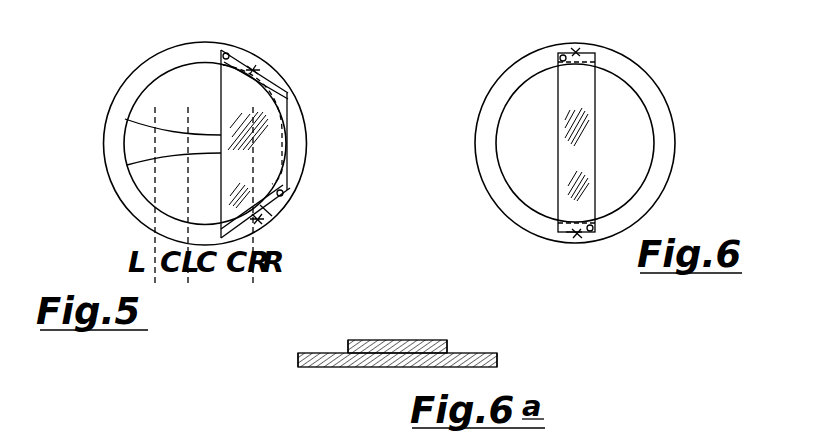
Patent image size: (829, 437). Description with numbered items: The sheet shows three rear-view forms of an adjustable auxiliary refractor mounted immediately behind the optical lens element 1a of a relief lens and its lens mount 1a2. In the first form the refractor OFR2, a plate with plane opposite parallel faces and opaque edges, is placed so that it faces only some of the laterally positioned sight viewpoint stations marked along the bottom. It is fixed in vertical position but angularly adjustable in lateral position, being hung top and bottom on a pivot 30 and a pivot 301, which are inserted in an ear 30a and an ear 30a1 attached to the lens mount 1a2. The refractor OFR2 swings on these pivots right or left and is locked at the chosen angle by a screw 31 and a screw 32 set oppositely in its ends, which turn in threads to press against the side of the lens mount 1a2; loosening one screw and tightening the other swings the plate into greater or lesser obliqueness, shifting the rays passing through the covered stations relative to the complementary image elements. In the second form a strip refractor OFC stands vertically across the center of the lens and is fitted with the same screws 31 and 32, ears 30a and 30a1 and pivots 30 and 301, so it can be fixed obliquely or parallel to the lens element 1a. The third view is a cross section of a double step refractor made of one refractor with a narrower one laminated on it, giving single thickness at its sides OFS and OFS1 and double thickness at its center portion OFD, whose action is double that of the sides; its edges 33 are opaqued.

In FIG. 5, the optical lens element 1a is at (150, 143).
In FIG. 6, the optical lens element 1a is at (522, 161).
In FIG. 5, the lens mount 1a2 is at (119, 118).
In FIG. 6, the lens mount 1a2 is at (490, 135).
In FIG. 5, the pivot 30 is at (258, 71).
In FIG. 6, the pivot 30 is at (597, 56).
In FIG. 5, the ear 30a is at (252, 63).
In FIG. 6, the ear 30a is at (574, 50).
In FIG. 5, the ear 30a1 is at (258, 223).
In FIG. 6, the ear 30a1 is at (575, 234).
In FIG. 5, the pivot 301 is at (263, 211).
In FIG. 6, the pivot 301 is at (574, 236).
In FIG. 5, the screw 31 is at (226, 52).
In FIG. 6, the screw 31 is at (560, 56).
In FIG. 5, the screw 32 is at (284, 193).
In FIG. 6, the screw 32 is at (591, 232).
In FIG. 6A, the edges 33 is at (348, 345).
In FIG. 5, the refractor OFR2 is at (238, 112).
In FIG. 6, the strip refractor OFC is at (575, 152).
In FIG. 6A, the center portion OFD is at (437, 316).
In FIG. 6A, the side OFS is at (497, 357).
In FIG. 6A, the side OFS1 is at (344, 362).